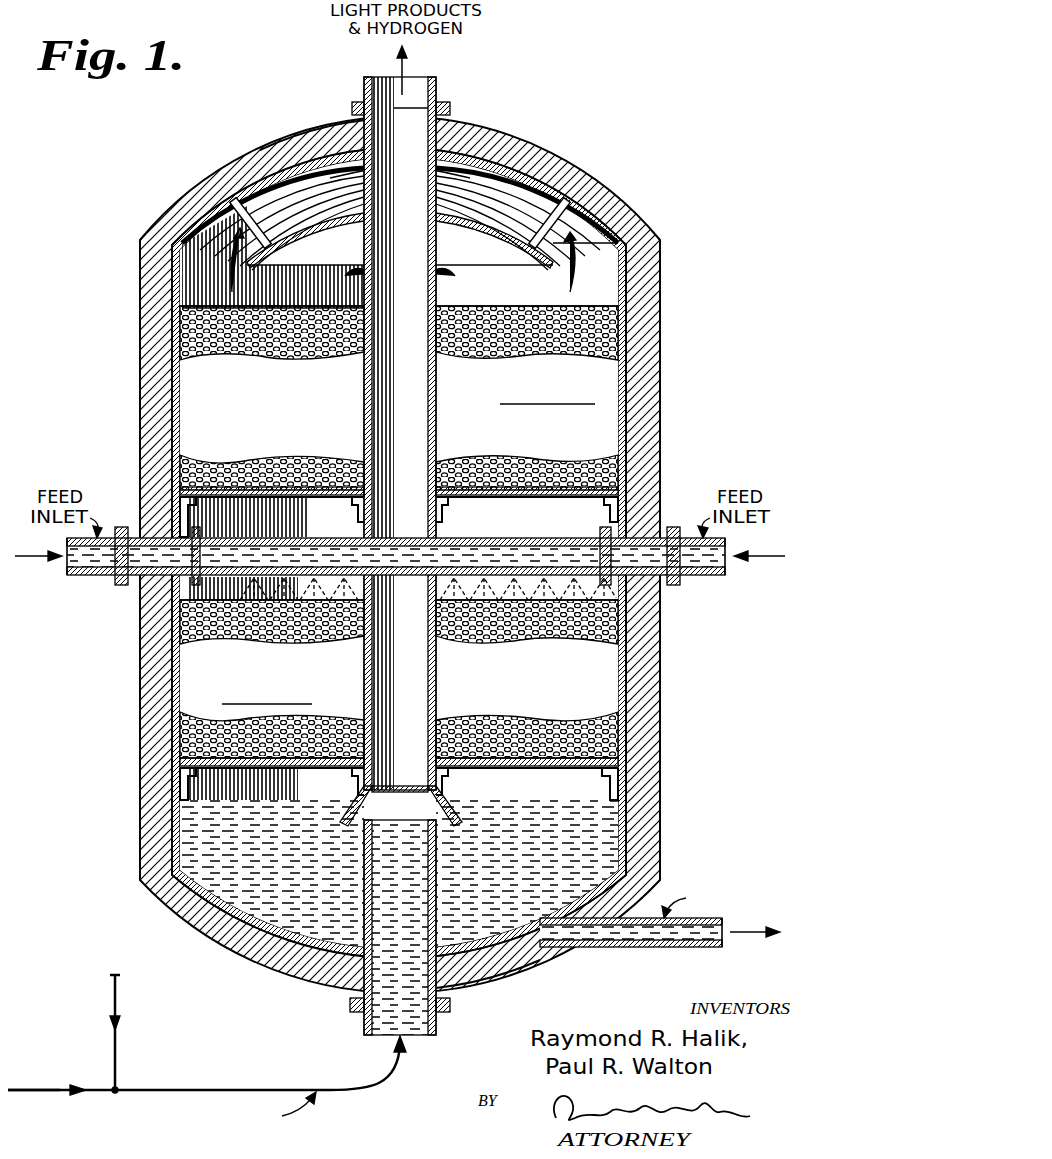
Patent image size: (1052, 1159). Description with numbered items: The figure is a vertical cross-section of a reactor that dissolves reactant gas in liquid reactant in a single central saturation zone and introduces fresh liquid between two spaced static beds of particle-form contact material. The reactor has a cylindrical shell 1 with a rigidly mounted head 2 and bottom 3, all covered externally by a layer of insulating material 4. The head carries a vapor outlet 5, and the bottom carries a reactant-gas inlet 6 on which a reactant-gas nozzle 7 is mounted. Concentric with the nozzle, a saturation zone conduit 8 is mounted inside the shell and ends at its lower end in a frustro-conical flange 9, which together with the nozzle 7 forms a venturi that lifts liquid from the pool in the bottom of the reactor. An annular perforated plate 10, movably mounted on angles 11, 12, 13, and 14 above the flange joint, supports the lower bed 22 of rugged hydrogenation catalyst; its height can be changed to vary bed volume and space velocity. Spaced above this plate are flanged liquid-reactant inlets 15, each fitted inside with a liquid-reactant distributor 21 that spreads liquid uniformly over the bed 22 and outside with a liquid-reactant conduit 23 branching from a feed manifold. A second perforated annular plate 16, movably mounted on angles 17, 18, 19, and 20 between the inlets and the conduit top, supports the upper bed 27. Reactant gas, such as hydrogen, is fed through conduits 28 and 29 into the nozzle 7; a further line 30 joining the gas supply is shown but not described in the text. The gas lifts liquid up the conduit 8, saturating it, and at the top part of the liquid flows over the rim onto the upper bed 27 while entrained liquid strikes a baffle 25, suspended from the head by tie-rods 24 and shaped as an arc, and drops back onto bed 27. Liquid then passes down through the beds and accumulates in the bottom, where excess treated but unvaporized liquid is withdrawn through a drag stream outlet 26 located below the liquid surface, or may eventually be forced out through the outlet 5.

The cylindrical shell 1 is at (172, 374).
The head 2 is at (302, 165).
The bottom 3 is at (462, 978).
The layer of insulating material 4 is at (150, 270).
The vapor outlet 5 is at (352, 116).
The reactant-gas inlet 6 is at (356, 992).
The reactant-gas nozzle 7 is at (437, 892).
The saturation zone conduit 8 is at (437, 690).
The frustro-conical flange 9 is at (446, 820).
The annular perforated plate 10 is at (536, 766).
The angle 11 is at (180, 782).
The angle 12 is at (356, 776).
The angle 13 is at (442, 774).
The angle 14 is at (618, 776).
The liquid-reactant inlet 15 is at (128, 586).
The second perforated annular plate 16 is at (540, 502).
The angle 17 is at (182, 510).
The angle 18 is at (356, 520).
The angle 19 is at (444, 510).
The angle 20 is at (610, 513).
The liquid-reactant distributor 21 is at (318, 556).
The lower bed of particle-form solid contact material 22 is at (180, 676).
The liquid-reactant conduit 23 is at (84, 576).
The tie-rod 24 is at (248, 225).
The baffle 25 is at (468, 225).
The drag stream outlet 26 is at (676, 947).
The upper bed of particle-form solid contact material 27 is at (622, 348).
The conduit 28 is at (54, 1088).
The conduit 29 is at (254, 1088).
The branch gas line 30 is at (112, 986).